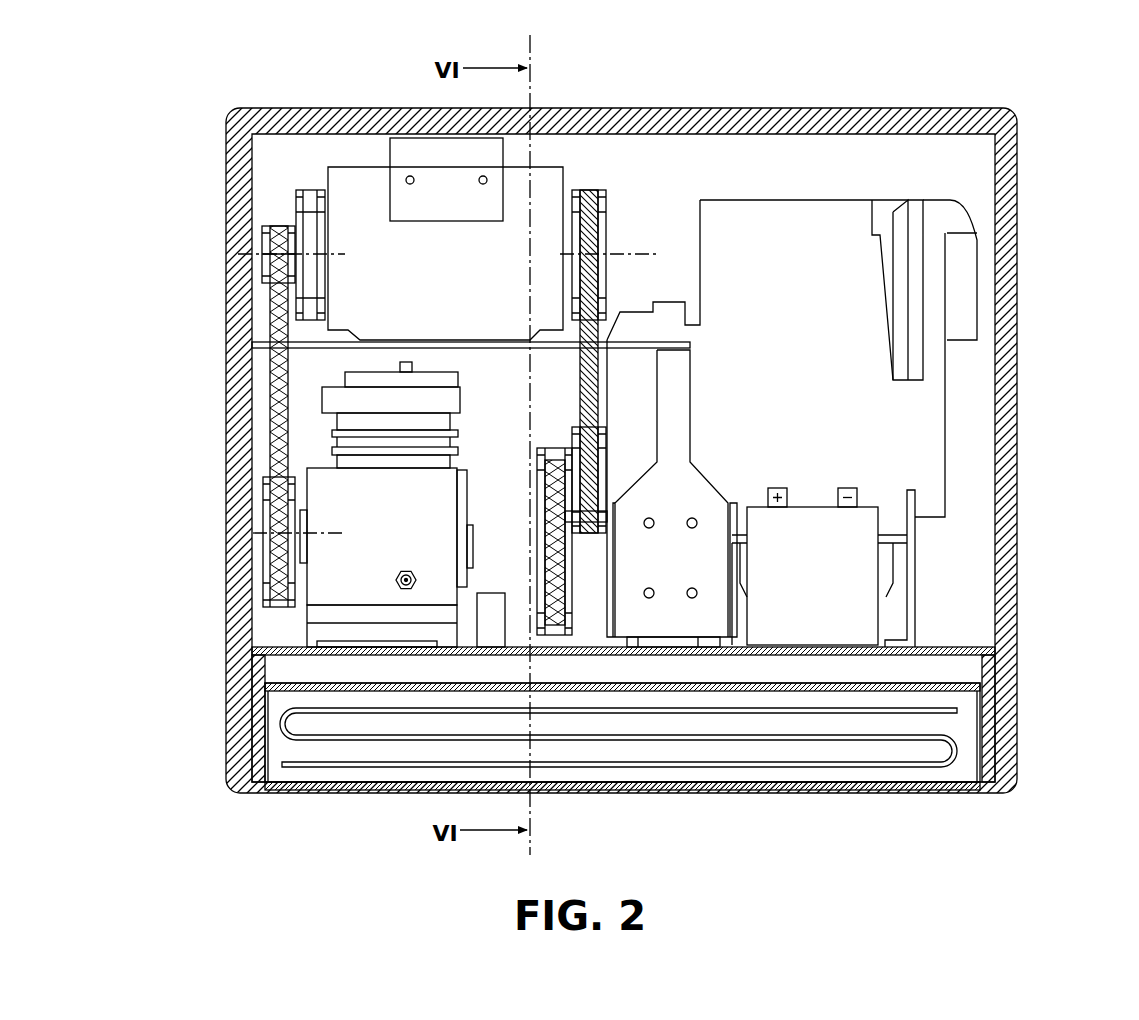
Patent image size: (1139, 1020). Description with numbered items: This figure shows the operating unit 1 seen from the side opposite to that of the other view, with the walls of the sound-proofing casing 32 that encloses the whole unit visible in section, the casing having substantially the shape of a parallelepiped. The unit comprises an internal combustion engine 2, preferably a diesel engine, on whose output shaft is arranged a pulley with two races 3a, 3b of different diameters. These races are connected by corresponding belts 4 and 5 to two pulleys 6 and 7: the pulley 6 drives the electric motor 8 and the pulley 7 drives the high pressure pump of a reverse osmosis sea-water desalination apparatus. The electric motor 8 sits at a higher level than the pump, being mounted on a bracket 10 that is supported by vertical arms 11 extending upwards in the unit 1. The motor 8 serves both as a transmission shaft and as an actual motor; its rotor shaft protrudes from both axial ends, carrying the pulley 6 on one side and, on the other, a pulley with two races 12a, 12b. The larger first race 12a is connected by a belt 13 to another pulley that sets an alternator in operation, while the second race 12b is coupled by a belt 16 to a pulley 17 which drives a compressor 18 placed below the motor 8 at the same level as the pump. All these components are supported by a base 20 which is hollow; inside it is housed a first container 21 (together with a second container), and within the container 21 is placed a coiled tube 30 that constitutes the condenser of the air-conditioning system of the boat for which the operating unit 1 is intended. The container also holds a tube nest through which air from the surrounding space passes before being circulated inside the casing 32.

The operating unit 1 is at (1060, 222).
The internal combustion engine 2 is at (794, 373).
The first race 3a is at (597, 537).
The second race 3b is at (537, 473).
The belt 4 is at (580, 398).
The belt 5 is at (540, 550).
The pulley 6 is at (602, 242).
The pulley 7 is at (583, 630).
The electric motor 8 is at (443, 290).
The bracket 10 is at (493, 349).
The vertical arms 11 is at (658, 504).
The first race 12a is at (296, 207).
The second race 12b is at (263, 275).
The belt 13 is at (312, 188).
The belt 16 is at (268, 387).
The pulley 17 is at (268, 542).
The compressor 18 is at (375, 550).
The base 20 is at (258, 717).
The first container 21 is at (757, 793).
The coiled tube 30 is at (925, 767).
The sound-proofing casing 32 is at (877, 112).